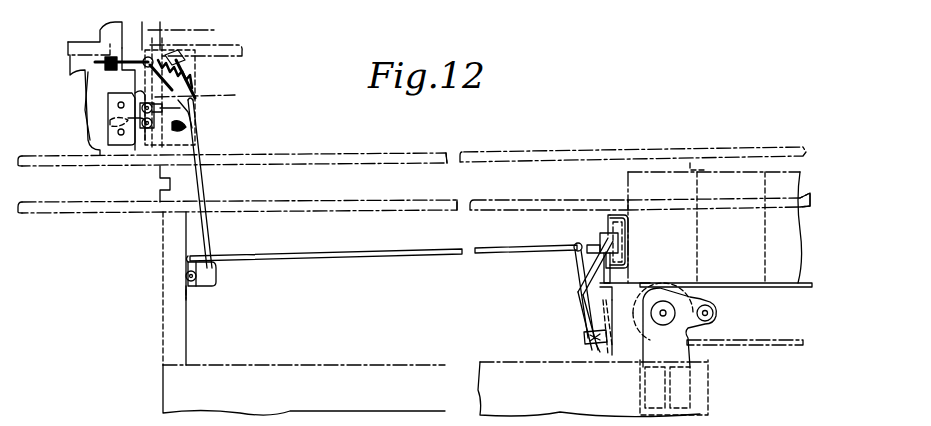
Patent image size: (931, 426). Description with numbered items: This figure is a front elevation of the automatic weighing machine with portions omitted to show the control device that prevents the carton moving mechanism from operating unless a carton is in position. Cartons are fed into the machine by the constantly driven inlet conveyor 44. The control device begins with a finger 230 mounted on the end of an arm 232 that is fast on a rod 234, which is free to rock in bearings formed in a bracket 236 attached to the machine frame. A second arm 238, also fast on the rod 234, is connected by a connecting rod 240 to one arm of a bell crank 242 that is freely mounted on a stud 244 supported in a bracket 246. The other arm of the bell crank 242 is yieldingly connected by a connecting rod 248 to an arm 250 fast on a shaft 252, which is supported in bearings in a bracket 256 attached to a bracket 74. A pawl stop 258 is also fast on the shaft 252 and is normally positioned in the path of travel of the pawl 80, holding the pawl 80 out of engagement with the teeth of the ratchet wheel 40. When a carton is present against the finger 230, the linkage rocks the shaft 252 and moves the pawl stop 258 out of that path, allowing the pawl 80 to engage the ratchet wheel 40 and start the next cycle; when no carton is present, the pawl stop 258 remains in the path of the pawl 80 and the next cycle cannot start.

The bracket 74 is at (100, 32).
The ratchet wheel 40 is at (195, 39).
The shaft 252 is at (95, 62).
The arm 250 is at (180, 78).
The bracket 256 is at (108, 106).
The pawl stop 258 is at (195, 120).
The pawl 80 is at (157, 123).
The connecting rod 248 is at (206, 177).
The bell crank 242 is at (188, 266).
The bracket 246 is at (186, 280).
The stud 244 is at (186, 290).
The connecting rod 240 is at (373, 258).
The finger 230 is at (608, 222).
The arm 238 is at (573, 258).
The arm 232 is at (580, 282).
The rod 234 is at (584, 334).
The bracket 236 is at (607, 350).
The inlet conveyor 44 is at (722, 290).